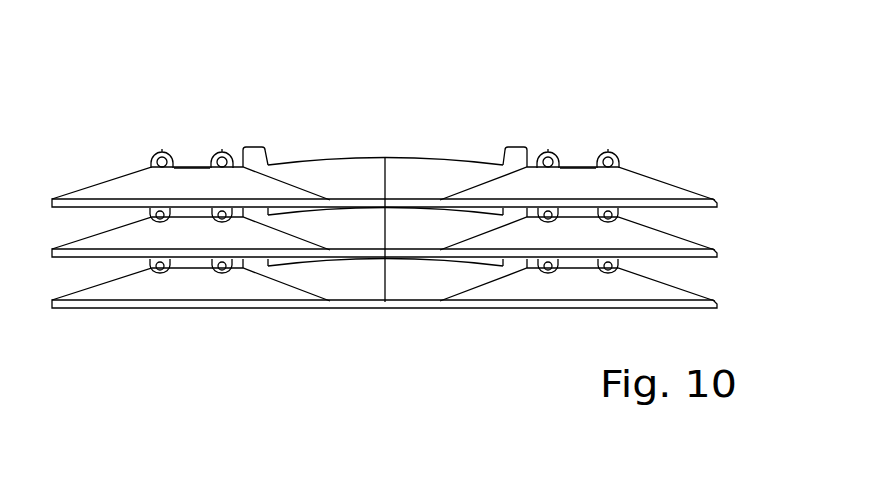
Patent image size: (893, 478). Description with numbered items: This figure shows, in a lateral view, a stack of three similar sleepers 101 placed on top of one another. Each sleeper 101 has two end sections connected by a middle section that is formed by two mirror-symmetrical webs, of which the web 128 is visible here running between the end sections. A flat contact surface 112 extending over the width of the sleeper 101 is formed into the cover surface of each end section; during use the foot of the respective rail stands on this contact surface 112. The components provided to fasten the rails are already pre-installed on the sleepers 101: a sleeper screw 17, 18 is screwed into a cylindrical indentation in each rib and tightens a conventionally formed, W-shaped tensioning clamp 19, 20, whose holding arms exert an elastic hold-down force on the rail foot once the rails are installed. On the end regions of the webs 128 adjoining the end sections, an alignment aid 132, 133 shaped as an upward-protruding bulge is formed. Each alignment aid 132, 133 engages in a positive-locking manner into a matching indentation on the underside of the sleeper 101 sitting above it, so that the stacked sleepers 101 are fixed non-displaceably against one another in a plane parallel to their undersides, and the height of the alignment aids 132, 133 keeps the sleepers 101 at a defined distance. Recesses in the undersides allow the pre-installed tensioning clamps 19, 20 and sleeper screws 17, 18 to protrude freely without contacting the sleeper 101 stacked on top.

The sleeper 101 is at (660, 192).
The web 128 is at (362, 157).
The alignment aid 132 is at (252, 147).
The alignment aid 133 is at (507, 147).
The sleeper screw 17 is at (162, 152).
The sleeper screw 18 is at (220, 152).
The tensioning clamp 19 is at (228, 156).
The tensioning clamp 20 is at (150, 158).
The contact surface 112 is at (190, 160).